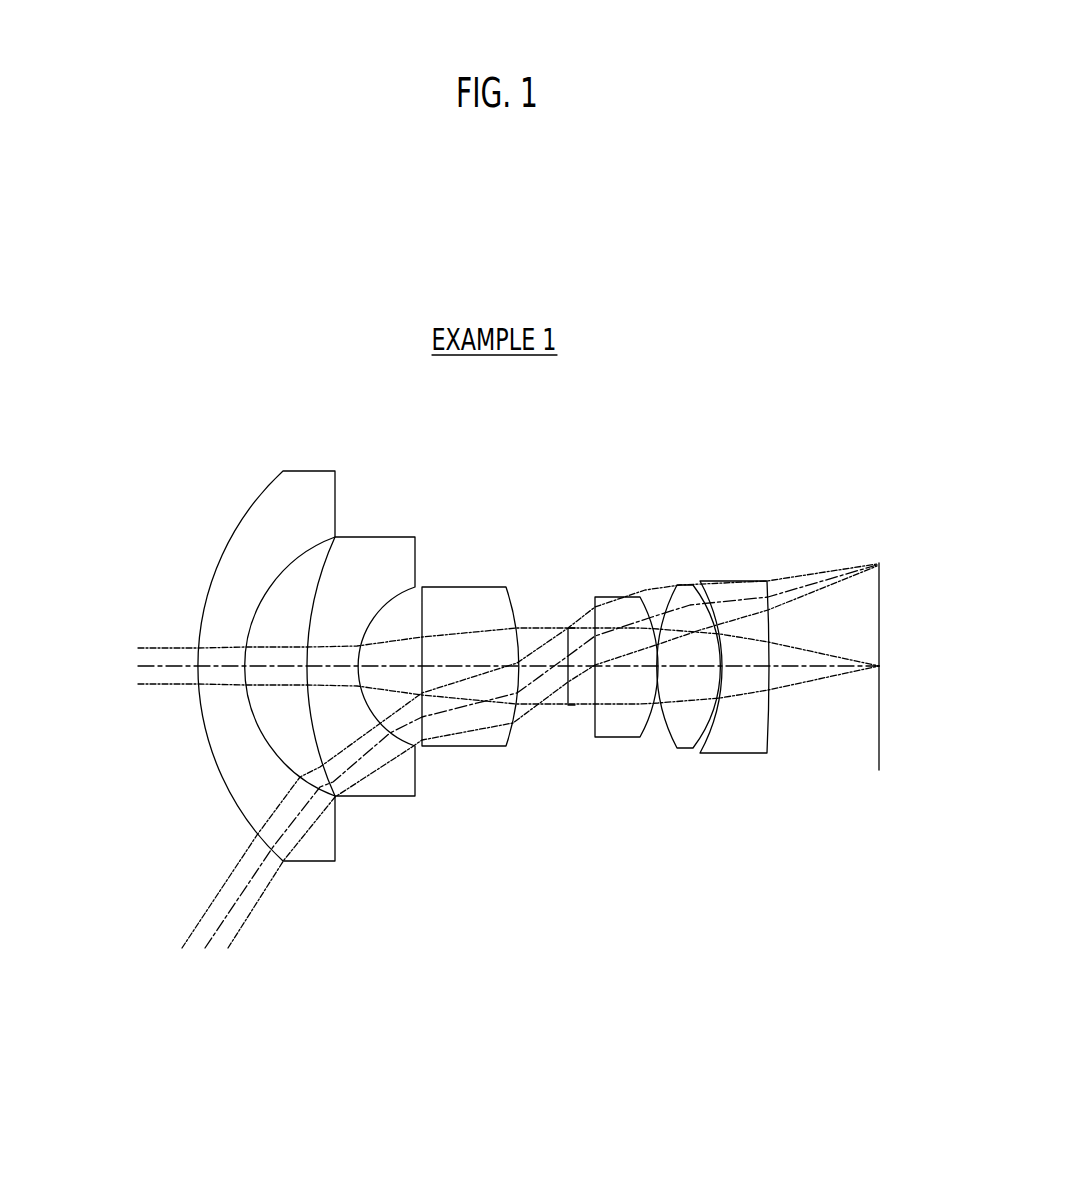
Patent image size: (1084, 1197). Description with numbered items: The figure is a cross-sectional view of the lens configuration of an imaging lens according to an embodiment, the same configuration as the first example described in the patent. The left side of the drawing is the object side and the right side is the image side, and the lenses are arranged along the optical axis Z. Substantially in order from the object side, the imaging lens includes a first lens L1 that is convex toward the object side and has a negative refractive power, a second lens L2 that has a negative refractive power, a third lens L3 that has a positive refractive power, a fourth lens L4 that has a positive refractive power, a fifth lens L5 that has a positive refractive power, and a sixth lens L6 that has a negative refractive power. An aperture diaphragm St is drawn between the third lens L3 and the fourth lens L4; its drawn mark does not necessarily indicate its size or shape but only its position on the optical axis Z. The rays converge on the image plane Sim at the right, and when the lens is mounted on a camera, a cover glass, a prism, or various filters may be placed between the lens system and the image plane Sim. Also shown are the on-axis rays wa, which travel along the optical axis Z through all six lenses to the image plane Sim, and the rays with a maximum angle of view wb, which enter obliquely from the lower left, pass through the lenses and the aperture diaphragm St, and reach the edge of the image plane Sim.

The first lens L1 is at (308, 485).
The second lens L2 is at (377, 547).
The third lens L3 is at (468, 593).
The fourth lens L4 is at (610, 600).
The fifth lens L5 is at (685, 590).
The sixth lens L6 is at (733, 581).
The aperture diaphragm St is at (570, 706).
The image plane Sim is at (880, 771).
The optical axis Z is at (157, 664).
The on-axis rays wa is at (138, 630).
The rays with maximum angle of view wb is at (240, 953).